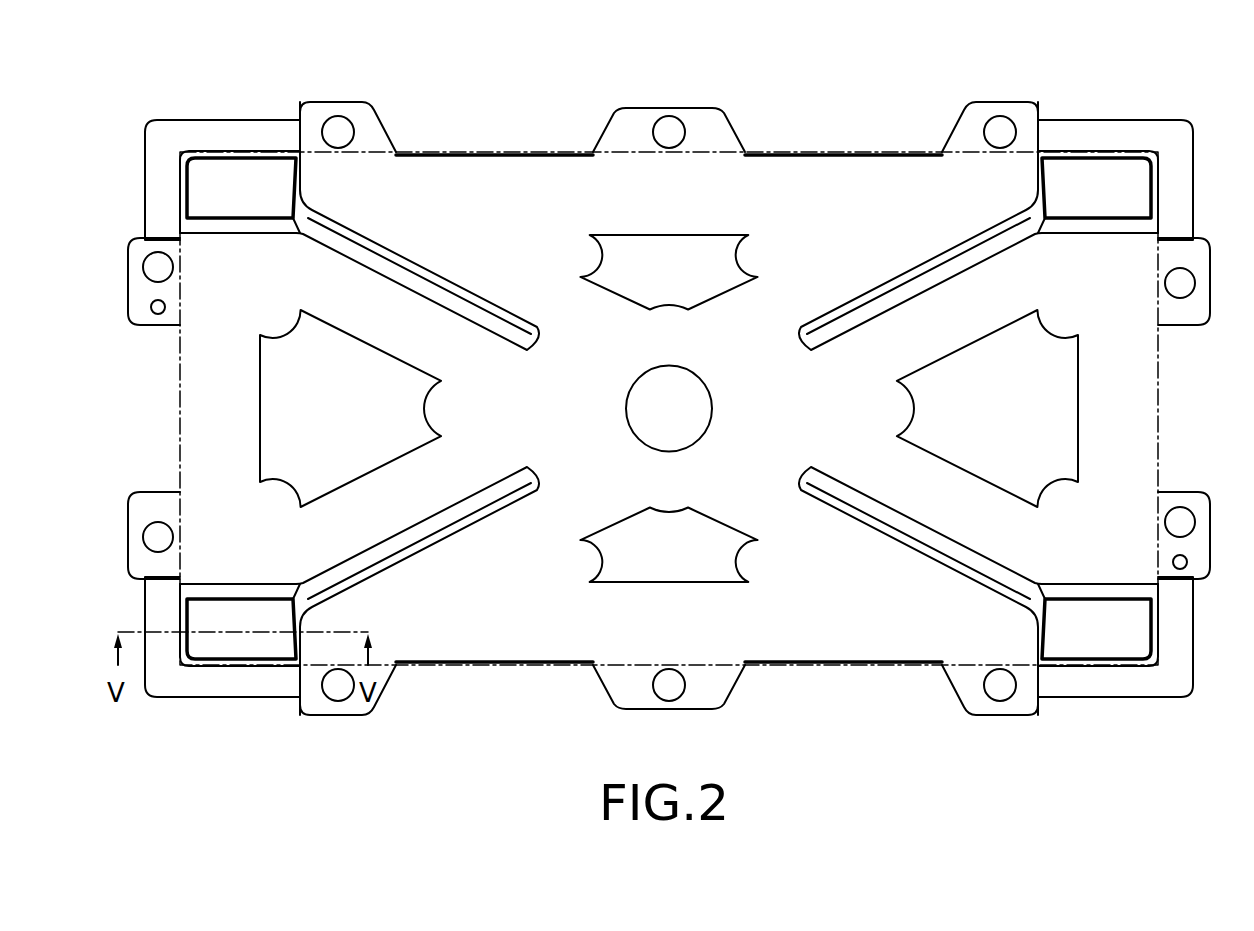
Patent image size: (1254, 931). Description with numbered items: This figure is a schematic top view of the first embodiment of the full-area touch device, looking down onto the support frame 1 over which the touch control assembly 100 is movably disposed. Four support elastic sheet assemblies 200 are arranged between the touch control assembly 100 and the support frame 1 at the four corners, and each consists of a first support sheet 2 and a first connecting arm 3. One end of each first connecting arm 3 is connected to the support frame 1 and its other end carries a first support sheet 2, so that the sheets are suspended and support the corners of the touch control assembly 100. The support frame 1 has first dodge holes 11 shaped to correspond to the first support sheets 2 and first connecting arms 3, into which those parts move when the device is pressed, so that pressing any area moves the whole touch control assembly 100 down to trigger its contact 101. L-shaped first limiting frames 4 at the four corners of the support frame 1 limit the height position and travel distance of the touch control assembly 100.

The touch control assembly 100 is at (818, 140).
The support frame 1 is at (755, 206).
The contact 101 is at (669, 408).
The first dodge hole 11 is at (875, 295).
The first connecting arm 3 is at (937, 275).
The support elastic sheet assembly 200 is at (1085, 176).
The first support sheet 2 is at (1138, 202).
The first limiting frame 4 is at (1175, 135).